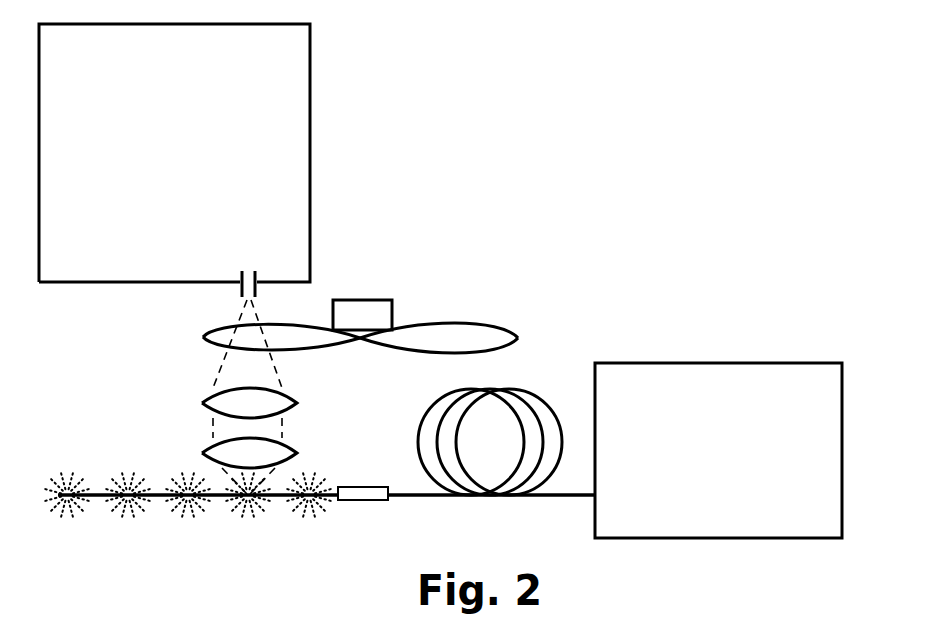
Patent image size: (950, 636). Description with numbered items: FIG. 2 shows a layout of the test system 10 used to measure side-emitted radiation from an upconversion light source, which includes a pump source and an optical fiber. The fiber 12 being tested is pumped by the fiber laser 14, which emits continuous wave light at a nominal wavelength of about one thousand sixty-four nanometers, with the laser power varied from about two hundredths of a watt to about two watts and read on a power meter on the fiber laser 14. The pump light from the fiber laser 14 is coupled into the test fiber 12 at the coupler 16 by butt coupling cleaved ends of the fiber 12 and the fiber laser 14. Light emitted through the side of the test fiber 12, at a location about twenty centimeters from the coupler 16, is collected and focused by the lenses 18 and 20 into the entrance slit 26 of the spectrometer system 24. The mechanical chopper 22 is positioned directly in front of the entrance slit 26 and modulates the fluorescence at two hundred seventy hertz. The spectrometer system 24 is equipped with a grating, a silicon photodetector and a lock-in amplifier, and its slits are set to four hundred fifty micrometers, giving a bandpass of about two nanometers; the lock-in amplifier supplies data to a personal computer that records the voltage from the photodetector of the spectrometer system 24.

The test system 10 is at (548, 159).
The fiber 12 is at (218, 498).
The fiber laser 14 is at (712, 363).
The coupler 16 is at (362, 502).
The lens 18 is at (208, 449).
The lens 20 is at (208, 400).
The mechanical chopper 22 is at (362, 299).
The spectrometer system 24 is at (311, 163).
The entrance slit 26 is at (240, 288).